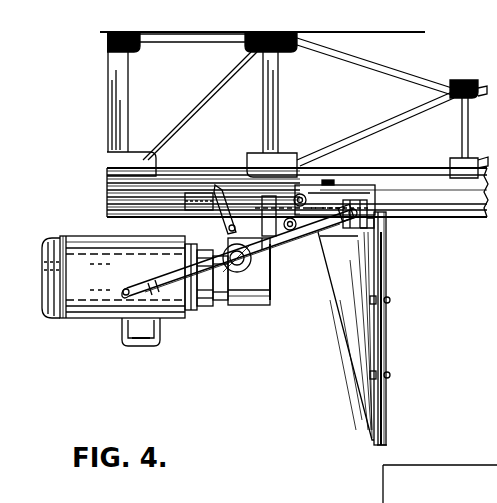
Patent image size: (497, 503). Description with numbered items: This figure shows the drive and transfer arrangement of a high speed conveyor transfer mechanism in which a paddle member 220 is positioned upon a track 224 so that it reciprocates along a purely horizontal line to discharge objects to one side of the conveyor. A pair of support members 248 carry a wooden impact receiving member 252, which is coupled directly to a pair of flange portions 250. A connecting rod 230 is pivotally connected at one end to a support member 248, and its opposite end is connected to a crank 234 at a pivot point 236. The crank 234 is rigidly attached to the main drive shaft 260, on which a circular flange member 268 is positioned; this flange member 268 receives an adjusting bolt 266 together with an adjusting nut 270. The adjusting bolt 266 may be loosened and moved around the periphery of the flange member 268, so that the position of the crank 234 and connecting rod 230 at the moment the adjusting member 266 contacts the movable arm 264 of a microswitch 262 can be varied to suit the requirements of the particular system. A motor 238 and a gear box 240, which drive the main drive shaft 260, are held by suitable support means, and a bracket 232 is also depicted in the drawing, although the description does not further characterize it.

The paddle member 220 is at (402, 334).
The track 224 is at (388, 372).
The connecting rod 230 is at (224, 300).
The pivot bracket 232 is at (358, 228).
The crank 234 is at (208, 308).
The pivot point 236 is at (123, 318).
The motor 238 is at (170, 346).
The gear box 240 is at (240, 305).
The support member 248 is at (328, 330).
The flange portion 250 is at (386, 247).
The impact receiving member 252 is at (386, 407).
The main drive shaft 260 is at (200, 233).
The microswitch 262 is at (197, 192).
The movable arm 264 is at (237, 232).
The adjusting bolt 266 is at (268, 238).
The circular flange member 268 is at (270, 297).
The adjusting nut 270 is at (272, 262).